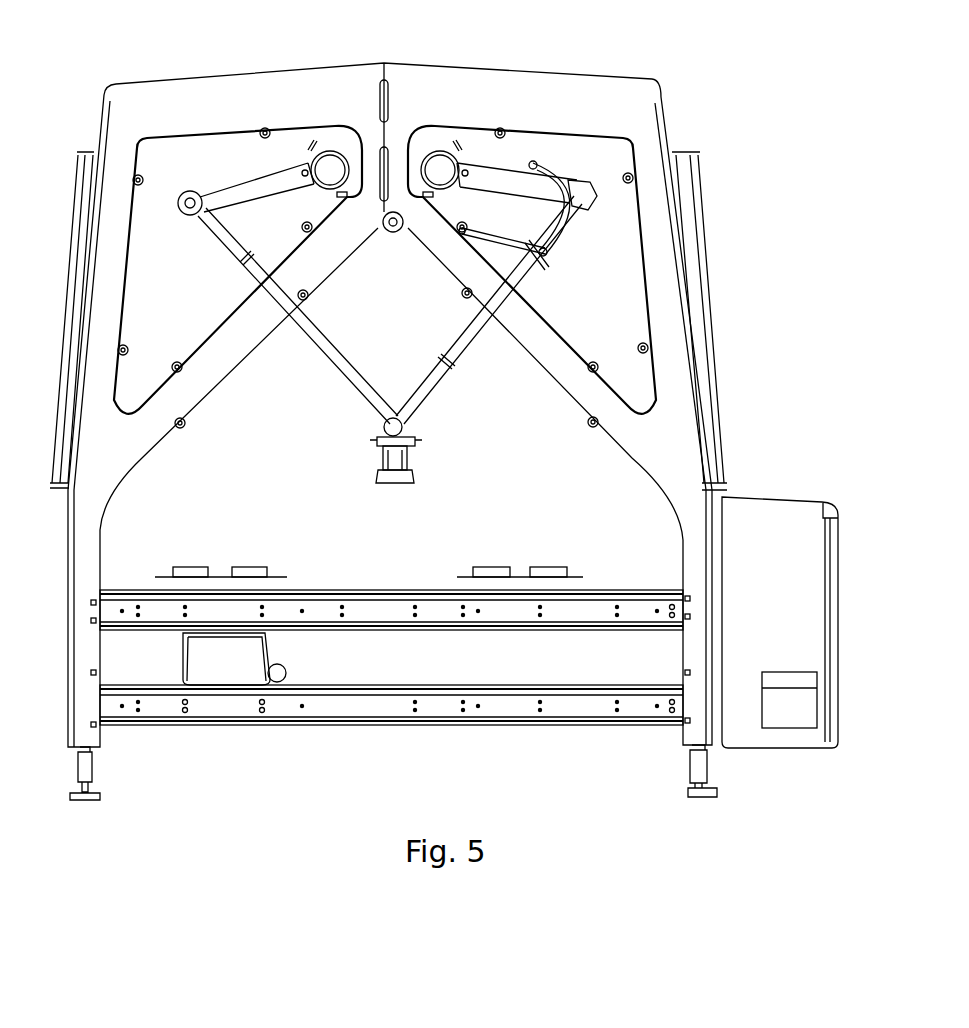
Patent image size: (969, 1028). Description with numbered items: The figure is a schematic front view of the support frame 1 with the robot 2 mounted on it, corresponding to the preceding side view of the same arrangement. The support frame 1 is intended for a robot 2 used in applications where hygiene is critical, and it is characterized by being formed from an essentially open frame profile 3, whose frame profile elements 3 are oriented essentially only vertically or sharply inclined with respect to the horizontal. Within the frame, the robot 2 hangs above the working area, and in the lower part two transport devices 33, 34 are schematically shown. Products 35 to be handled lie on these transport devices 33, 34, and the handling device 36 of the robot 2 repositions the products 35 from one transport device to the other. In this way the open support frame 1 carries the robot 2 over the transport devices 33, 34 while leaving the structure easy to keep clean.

The support frame 1 is at (665, 73).
The robot 2 is at (589, 236).
The frame profile 3 is at (667, 323).
The transport device 33 is at (580, 577).
The transport device 34 is at (288, 577).
The products 35 is at (188, 567).
The handling device 36 is at (443, 454).